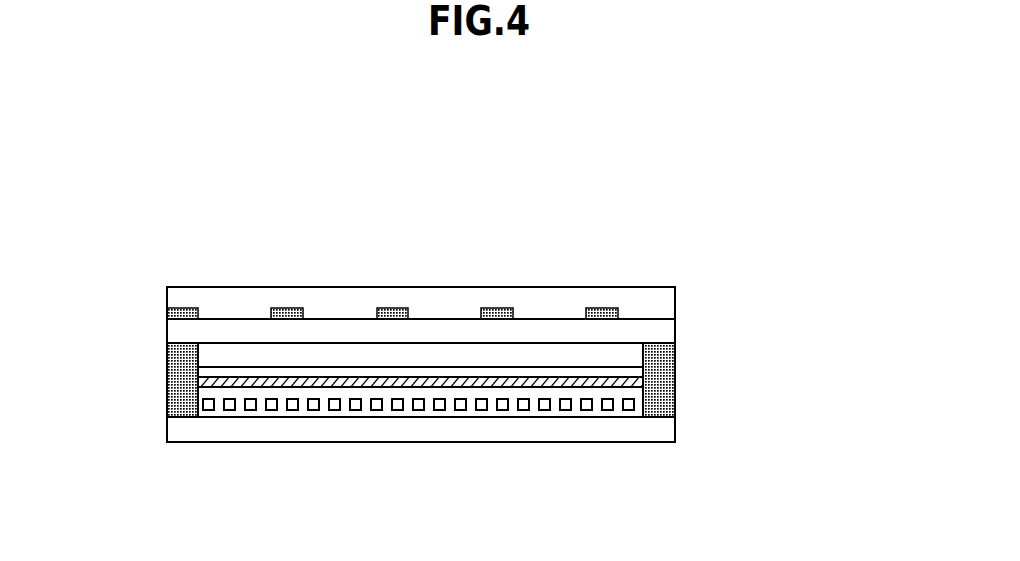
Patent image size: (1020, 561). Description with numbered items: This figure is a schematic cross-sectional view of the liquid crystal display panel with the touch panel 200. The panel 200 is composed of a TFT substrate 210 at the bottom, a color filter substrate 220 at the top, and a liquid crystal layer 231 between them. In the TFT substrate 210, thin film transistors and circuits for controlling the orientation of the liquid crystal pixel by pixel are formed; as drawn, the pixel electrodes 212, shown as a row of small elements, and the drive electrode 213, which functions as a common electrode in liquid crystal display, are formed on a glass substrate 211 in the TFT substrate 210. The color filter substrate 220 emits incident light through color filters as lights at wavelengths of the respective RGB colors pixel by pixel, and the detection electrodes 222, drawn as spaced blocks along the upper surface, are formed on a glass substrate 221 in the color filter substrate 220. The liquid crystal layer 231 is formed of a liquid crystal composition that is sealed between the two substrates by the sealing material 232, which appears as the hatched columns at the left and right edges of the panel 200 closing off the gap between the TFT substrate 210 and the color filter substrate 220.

The liquid crystal display panel with the touch panel 200 is at (497, 240).
The TFT substrate 210 is at (803, 368).
The glass substrate 211 is at (663, 430).
The pixel electrodes 212 is at (628, 404).
The drive electrode 213 is at (632, 382).
The color filter substrate 220 is at (803, 287).
The glass substrate 221 is at (662, 332).
The detection electrodes 222 is at (618, 308).
The liquid crystal layer 231 is at (208, 360).
The sealing material 232 is at (180, 402).